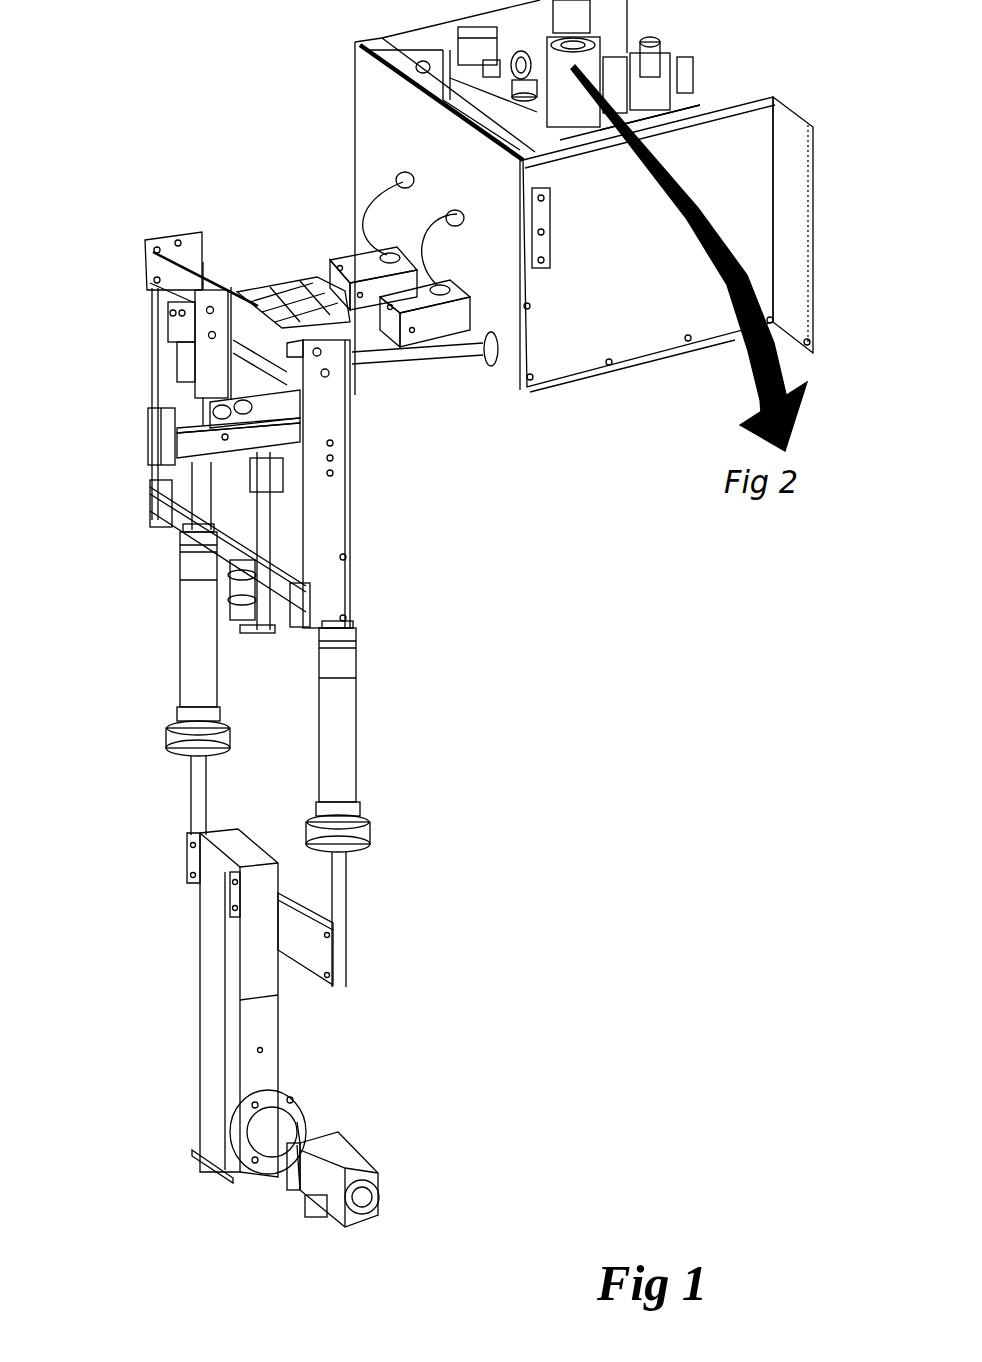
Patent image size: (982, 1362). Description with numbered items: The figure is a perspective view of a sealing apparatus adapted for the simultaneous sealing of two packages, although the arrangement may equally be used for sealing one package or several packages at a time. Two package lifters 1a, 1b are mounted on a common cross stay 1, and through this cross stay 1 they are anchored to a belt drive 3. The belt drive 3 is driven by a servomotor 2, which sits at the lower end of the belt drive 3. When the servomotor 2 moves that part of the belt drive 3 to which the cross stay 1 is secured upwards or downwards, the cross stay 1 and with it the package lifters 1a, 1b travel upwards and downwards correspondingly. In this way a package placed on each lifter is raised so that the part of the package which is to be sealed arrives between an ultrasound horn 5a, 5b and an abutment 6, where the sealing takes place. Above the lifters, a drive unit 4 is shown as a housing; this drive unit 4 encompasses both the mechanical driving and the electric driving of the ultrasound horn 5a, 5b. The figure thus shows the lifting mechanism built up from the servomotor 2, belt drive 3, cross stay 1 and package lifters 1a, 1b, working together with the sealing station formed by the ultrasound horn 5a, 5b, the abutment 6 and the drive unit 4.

The cross stay 1 is at (317, 952).
The package lifter 1a is at (182, 660).
The package lifter 1b is at (338, 713).
The servomotor 2 is at (332, 1153).
The belt drive 3 is at (213, 1032).
The drive unit 4 is at (638, 302).
The ultrasound horn 5a is at (307, 288).
The ultrasound horn 5b is at (373, 340).
The abutment 6 is at (180, 310).